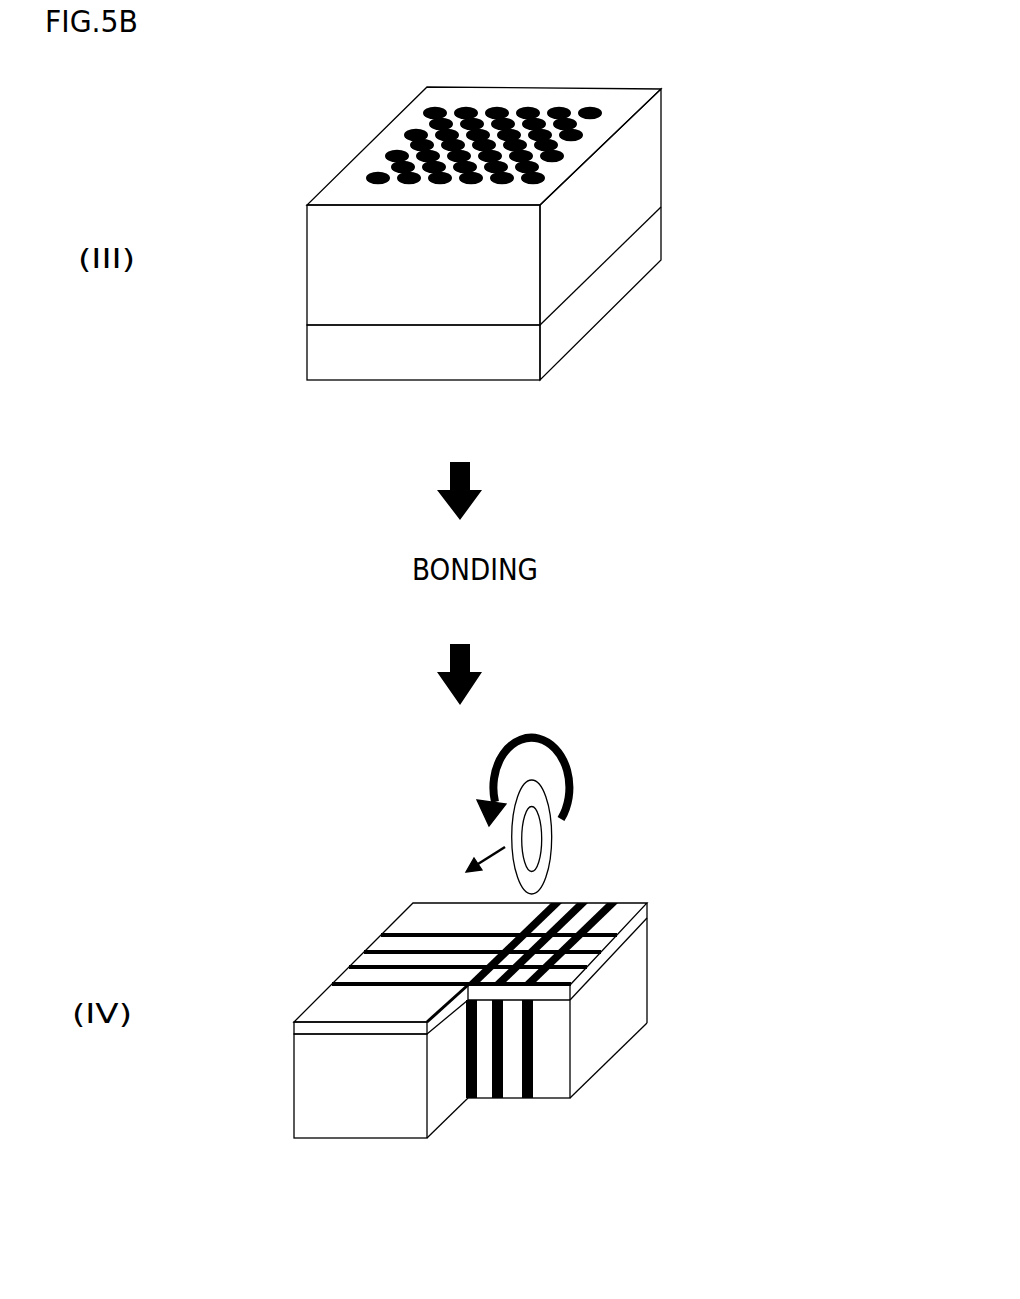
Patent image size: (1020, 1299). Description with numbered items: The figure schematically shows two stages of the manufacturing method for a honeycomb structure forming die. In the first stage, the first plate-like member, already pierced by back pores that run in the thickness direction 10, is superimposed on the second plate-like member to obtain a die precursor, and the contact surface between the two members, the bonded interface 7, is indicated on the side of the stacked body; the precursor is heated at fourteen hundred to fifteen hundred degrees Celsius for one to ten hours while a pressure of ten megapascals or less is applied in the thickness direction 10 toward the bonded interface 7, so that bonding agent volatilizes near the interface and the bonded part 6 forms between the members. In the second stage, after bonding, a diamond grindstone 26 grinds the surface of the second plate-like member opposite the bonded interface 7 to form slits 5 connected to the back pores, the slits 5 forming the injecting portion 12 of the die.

The slit 5 is at (614, 901).
The bonded part 6 is at (435, 137).
The bonded interface 7 is at (557, 307).
The thickness direction 10 is at (692, 96).
The injecting portion 12 is at (540, 979).
The grindstone (slicer) 26 is at (547, 847).